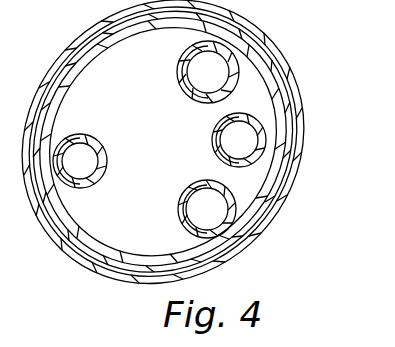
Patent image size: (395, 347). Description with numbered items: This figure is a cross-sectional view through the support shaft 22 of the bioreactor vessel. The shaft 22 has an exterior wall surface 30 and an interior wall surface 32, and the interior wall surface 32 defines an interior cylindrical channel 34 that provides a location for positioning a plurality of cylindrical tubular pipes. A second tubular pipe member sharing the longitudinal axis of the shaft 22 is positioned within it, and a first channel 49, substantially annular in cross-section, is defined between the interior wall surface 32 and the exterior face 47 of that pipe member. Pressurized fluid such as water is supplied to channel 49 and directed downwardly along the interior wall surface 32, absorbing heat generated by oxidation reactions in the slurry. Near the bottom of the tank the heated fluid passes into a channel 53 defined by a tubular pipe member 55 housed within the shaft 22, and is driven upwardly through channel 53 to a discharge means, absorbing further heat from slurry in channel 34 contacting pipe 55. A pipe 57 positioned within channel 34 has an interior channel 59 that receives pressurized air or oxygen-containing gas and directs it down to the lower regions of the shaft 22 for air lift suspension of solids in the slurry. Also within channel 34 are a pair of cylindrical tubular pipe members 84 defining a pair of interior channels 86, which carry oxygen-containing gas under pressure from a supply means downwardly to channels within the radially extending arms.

The support shaft 22 is at (289, 195).
The first channel 49 is at (273, 208).
The exterior face of tubular pipe member 47 is at (258, 222).
The exterior wall surface 30 is at (252, 244).
The interior wall surface 32 is at (246, 254).
The interior cylindrical channel 34 is at (140, 78).
The tubular pipe members 84 is at (186, 52).
The interior channels 86 is at (206, 72).
The pipe 57 is at (219, 123).
The interior channel 59 is at (238, 138).
The tubular pipe member 55 is at (99, 150).
The channel 53 is at (70, 155).